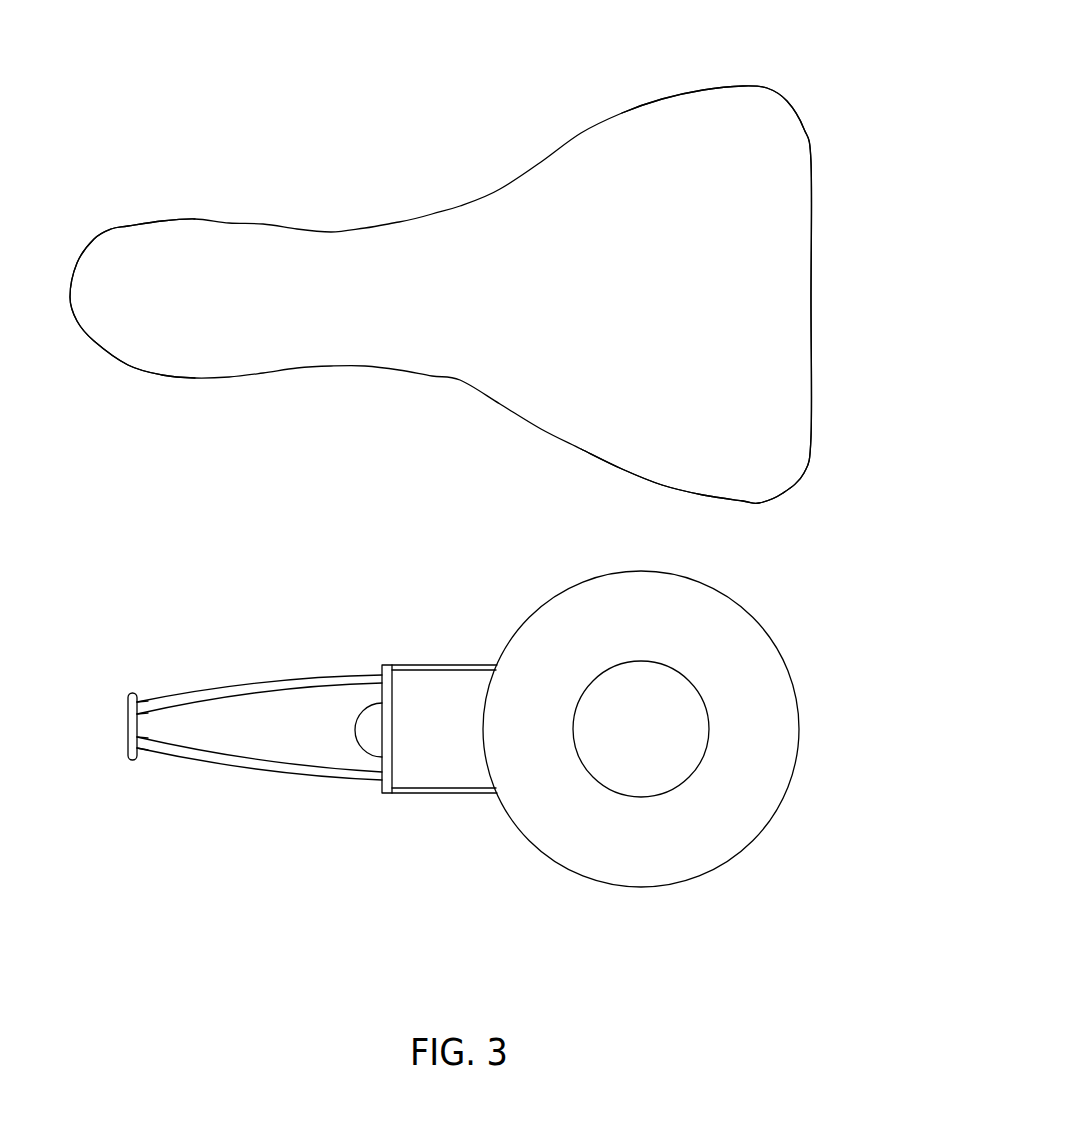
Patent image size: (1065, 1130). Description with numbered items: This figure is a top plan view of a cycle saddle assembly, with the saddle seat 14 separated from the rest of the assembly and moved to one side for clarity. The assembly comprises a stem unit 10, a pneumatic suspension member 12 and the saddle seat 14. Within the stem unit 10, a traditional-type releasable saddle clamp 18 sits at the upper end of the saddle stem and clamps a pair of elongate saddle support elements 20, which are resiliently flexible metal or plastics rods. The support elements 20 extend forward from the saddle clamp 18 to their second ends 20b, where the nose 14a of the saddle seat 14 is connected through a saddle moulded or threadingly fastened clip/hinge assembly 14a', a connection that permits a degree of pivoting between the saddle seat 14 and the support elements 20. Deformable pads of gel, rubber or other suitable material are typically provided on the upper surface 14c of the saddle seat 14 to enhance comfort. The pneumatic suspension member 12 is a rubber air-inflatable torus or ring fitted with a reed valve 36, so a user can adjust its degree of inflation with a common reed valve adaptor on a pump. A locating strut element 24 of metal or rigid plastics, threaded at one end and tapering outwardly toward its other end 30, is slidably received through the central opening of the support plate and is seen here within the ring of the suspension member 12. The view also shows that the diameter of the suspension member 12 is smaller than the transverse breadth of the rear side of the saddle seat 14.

The stem unit 10 is at (470, 751).
The pneumatic suspension member 12 is at (670, 751).
The saddle seat 14 is at (441, 255).
The nose 14a is at (132, 243).
The clip/hinge assembly 14a' is at (150, 784).
The upper surface 14c is at (709, 127).
The saddle clamp 18 is at (440, 705).
The elongate saddle support elements 20 is at (240, 767).
The second ends 20b is at (130, 745).
The locating strut element 24 is at (641, 796).
The other end 30 is at (654, 741).
The reed valve 36 is at (802, 727).